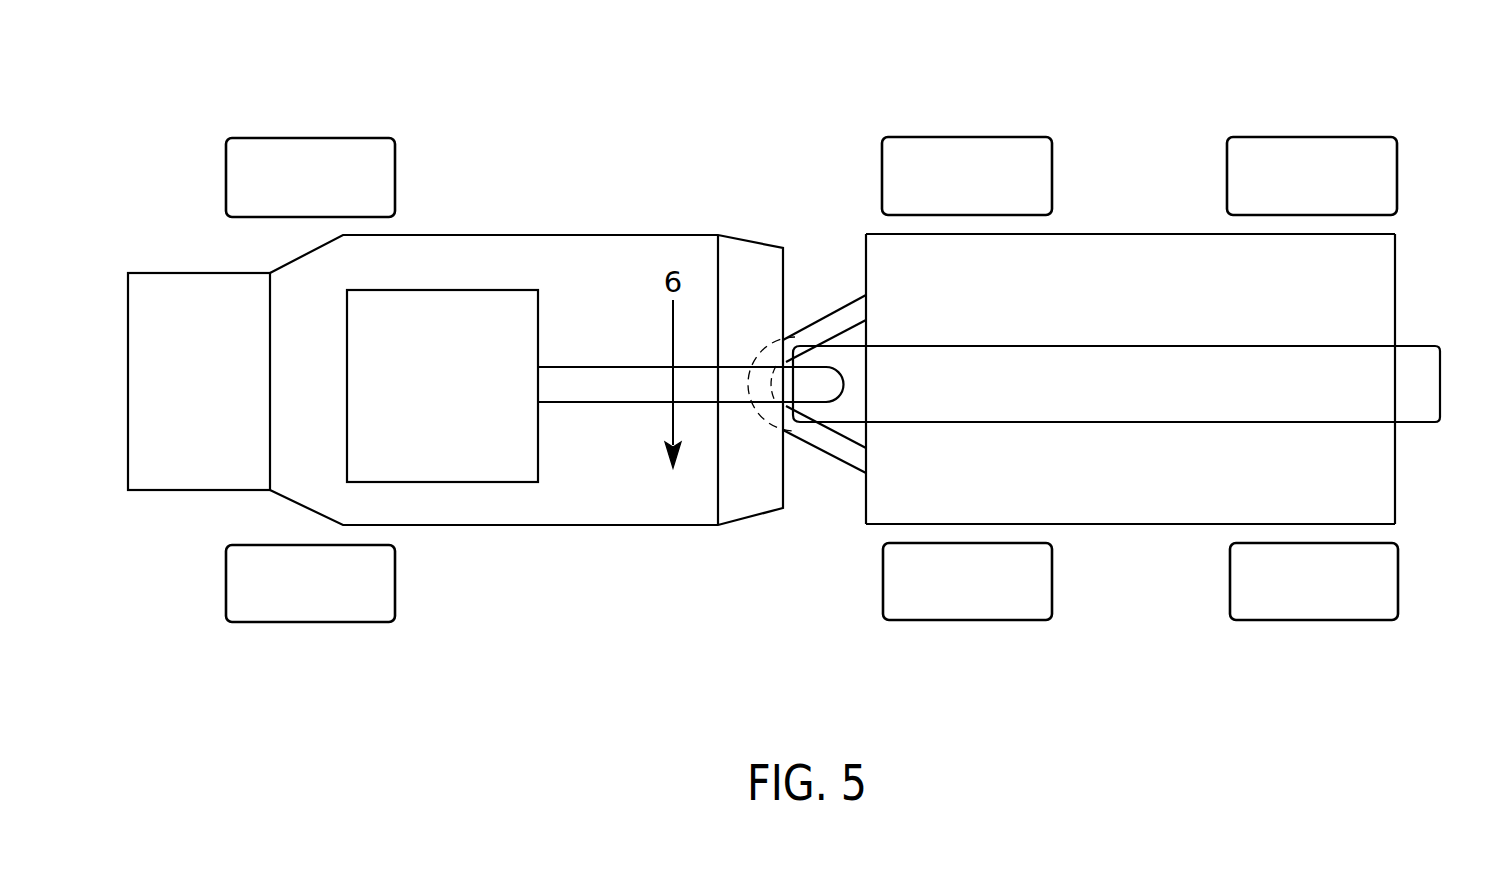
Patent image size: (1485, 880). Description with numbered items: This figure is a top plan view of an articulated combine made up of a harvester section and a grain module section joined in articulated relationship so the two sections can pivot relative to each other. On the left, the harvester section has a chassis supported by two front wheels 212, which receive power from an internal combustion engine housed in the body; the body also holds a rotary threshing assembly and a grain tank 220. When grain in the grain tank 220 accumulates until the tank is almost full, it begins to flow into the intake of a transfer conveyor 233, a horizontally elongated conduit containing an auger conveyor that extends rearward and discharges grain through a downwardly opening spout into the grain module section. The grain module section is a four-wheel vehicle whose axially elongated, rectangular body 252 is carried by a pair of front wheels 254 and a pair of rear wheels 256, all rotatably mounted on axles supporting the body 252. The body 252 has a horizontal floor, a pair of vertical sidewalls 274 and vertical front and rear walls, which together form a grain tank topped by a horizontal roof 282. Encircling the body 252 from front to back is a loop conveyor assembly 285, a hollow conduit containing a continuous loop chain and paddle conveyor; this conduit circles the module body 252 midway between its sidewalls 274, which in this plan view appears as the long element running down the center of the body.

The front wheels 212 is at (317, 157).
The grain tank 220 is at (478, 308).
The transfer conveyor 233 is at (618, 377).
The grain module body 252 is at (1070, 428).
The front wheels 254 is at (968, 148).
The trailer rear wheels 256 is at (1305, 148).
The vertical sidewalls 274 is at (1138, 247).
The horizontal roof 282 is at (869, 251).
The loop conveyor assembly 285 is at (1355, 328).